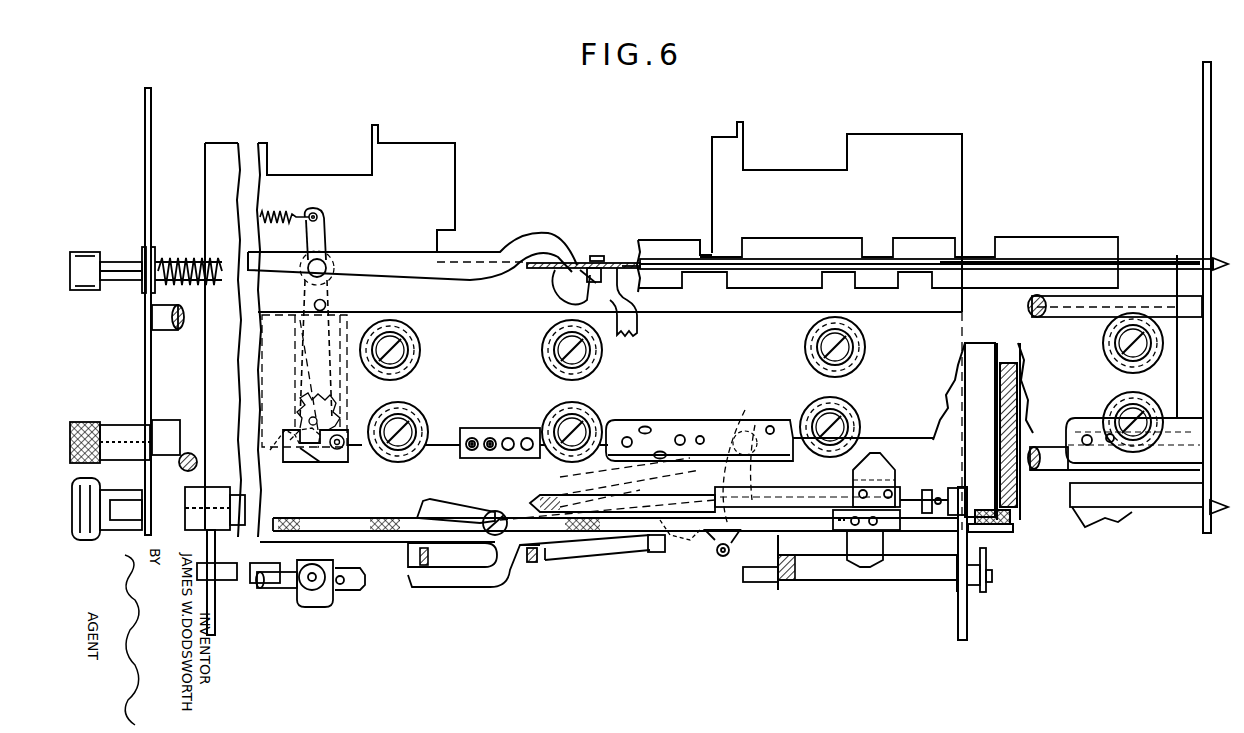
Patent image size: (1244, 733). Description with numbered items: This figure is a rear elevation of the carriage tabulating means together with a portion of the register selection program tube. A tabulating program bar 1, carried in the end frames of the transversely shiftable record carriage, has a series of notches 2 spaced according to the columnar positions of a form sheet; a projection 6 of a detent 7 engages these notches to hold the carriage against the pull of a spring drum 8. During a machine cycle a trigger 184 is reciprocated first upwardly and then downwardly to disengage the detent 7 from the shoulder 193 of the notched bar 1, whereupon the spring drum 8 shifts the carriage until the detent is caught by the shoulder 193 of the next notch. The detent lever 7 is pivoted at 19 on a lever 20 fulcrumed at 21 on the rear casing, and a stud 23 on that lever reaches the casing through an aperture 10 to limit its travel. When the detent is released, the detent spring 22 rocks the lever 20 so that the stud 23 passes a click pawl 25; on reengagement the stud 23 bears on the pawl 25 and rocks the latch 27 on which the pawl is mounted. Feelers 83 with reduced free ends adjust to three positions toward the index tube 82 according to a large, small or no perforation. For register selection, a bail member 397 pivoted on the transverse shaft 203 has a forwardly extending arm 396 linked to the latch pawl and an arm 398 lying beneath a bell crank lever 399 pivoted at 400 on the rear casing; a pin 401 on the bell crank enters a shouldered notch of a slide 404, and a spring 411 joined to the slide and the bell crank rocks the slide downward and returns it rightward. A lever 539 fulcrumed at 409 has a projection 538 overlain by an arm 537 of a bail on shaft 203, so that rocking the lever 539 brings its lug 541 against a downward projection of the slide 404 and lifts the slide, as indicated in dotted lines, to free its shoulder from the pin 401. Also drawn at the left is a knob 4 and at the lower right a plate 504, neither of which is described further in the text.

The tabulating program bar 1 is at (676, 248).
The notches 2 is at (850, 252).
The knob 4 is at (133, 445).
The projection 6 is at (580, 272).
The detent 7 is at (372, 268).
The spring drum 8 is at (1010, 395).
The aperture 10 is at (332, 463).
The pivot 19 is at (322, 258).
The lever 20 is at (306, 297).
The fulcrum 21 is at (327, 304).
The detent spring 22 is at (280, 213).
The stud 23 is at (338, 451).
The click pawl 25 is at (318, 448).
The latch 27 is at (300, 448).
The index tube 82 is at (664, 426).
The feelers 83 is at (489, 437).
The trigger 184 is at (640, 302).
The shoulder 193 is at (772, 252).
The transverse shaft 203 is at (750, 582).
The forwardly extending arm 396 is at (957, 595).
The bail member 397 is at (915, 572).
The forwardly extending arm 398 is at (845, 540).
The bell crank lever 399 is at (730, 552).
The pivot 400 is at (760, 572).
The pin 401 is at (745, 489).
The slide 404 is at (560, 481).
The fulcrum 409 is at (494, 511).
The spring 411 is at (682, 540).
The plate 504 is at (984, 570).
The arm 537 is at (418, 556).
The projection 538 is at (477, 575).
The lever 539 is at (440, 507).
The lug 541 is at (648, 552).